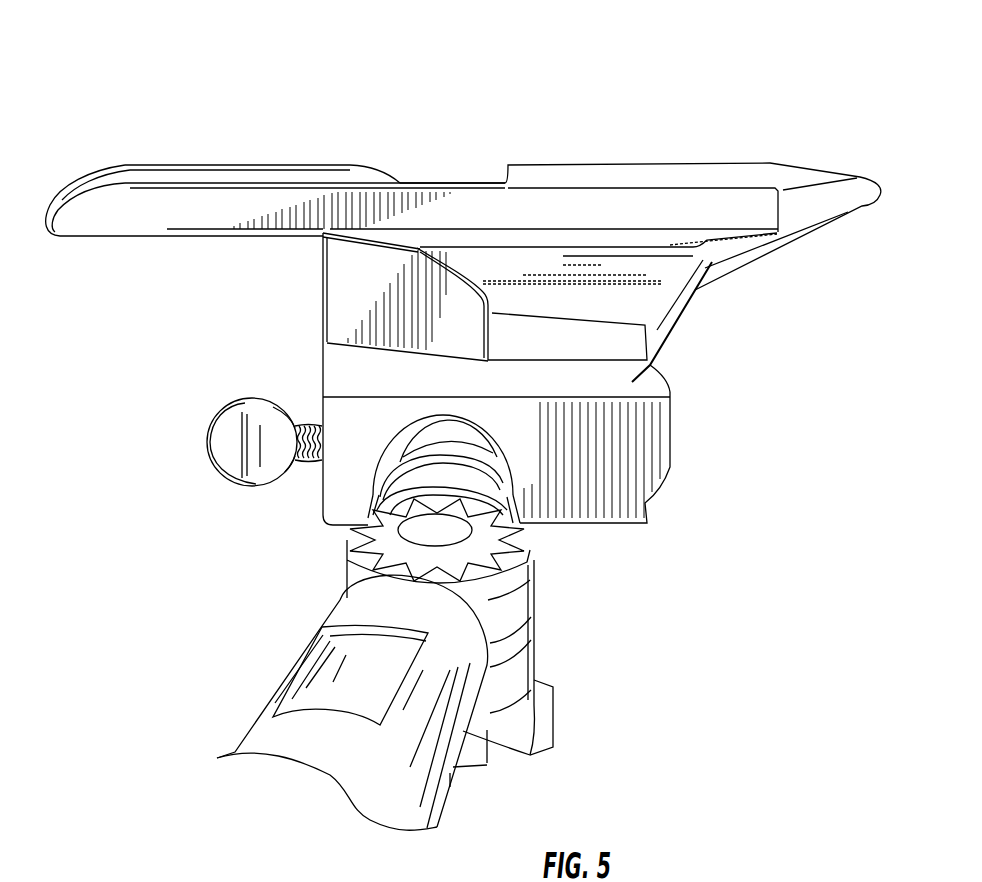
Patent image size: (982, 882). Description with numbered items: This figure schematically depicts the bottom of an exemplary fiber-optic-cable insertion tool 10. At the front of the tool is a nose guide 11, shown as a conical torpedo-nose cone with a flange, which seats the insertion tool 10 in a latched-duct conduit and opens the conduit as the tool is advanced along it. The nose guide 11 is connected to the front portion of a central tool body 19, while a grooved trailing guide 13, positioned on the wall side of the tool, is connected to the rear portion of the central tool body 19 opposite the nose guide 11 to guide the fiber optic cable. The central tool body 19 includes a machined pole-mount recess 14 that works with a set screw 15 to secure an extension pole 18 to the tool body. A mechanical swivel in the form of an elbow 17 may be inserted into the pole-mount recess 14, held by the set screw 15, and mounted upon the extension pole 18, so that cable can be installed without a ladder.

The fiber-optic-cable insertion tool 10 is at (604, 93).
The nose guide 11 is at (750, 172).
The grooved trailing guide 13 is at (168, 186).
The pole-mount recess 14 is at (428, 428).
The set screw 15 is at (224, 443).
The elbow 17 is at (437, 527).
The extension pole 18 is at (437, 603).
The central tool body 19 is at (633, 381).